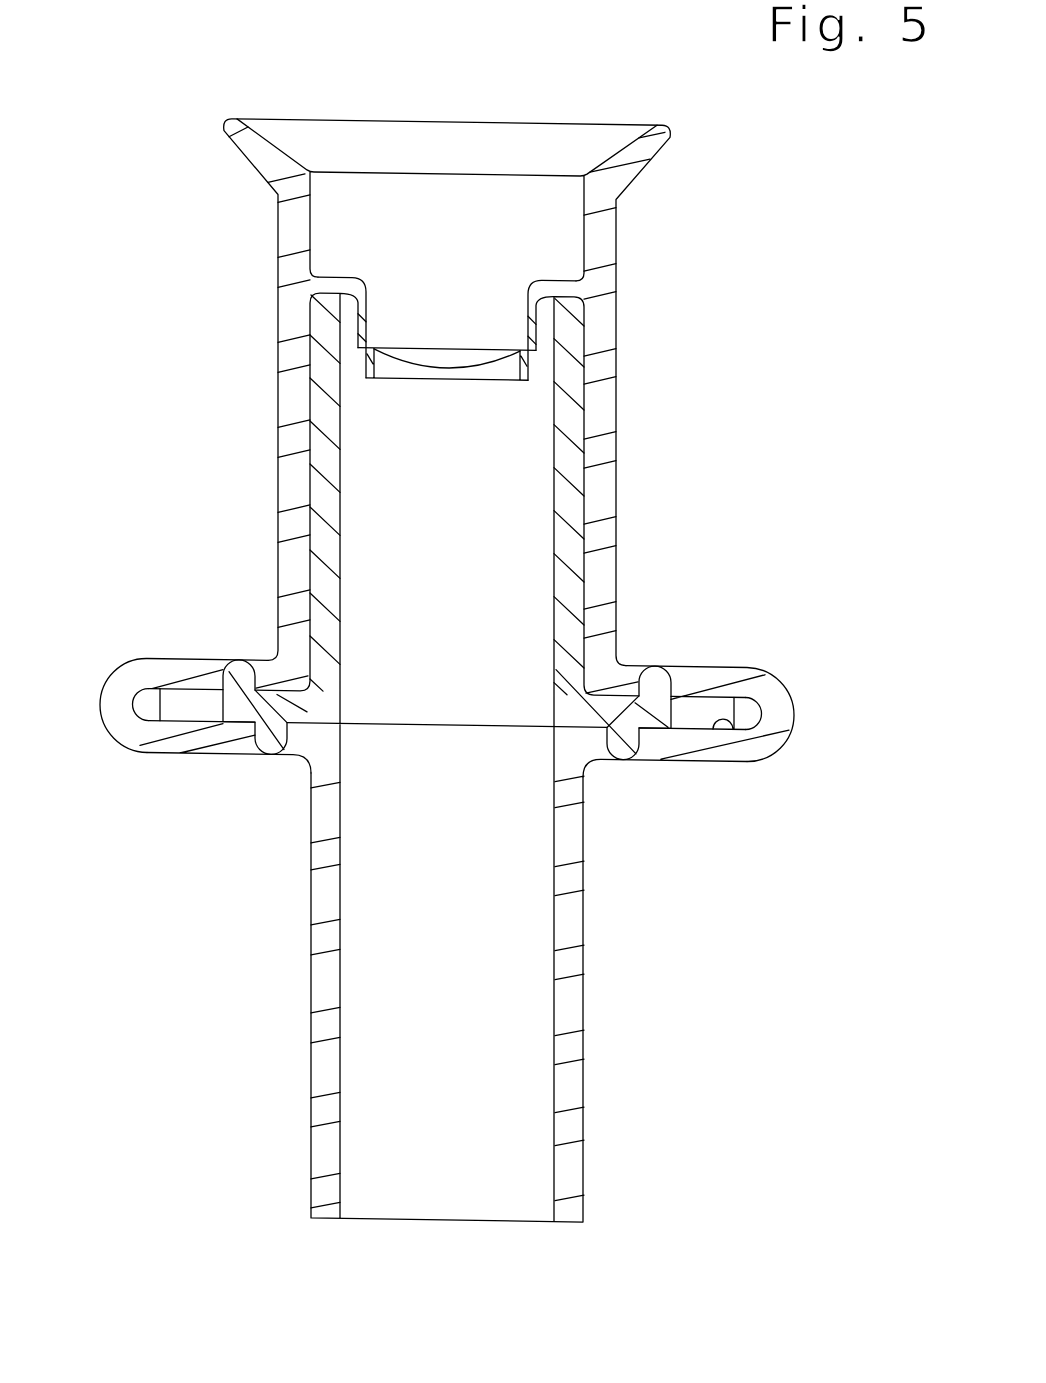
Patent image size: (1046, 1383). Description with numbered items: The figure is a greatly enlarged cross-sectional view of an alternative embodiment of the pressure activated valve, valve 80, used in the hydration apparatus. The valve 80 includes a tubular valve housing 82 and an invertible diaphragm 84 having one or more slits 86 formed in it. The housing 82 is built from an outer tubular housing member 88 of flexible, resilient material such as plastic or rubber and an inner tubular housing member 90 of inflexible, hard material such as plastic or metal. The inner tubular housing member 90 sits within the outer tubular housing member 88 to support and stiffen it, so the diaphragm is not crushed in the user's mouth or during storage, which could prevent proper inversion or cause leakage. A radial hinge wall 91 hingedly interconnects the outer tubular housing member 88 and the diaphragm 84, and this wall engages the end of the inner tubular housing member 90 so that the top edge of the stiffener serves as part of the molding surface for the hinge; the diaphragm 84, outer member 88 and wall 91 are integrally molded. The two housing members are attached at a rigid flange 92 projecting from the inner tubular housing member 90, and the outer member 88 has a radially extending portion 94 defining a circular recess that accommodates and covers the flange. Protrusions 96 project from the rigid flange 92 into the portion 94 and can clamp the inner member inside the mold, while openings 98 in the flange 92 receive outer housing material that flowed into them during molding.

The valve 80 is at (618, 450).
The valve housing 82 is at (295, 398).
The invertible diaphragm 84 is at (397, 373).
The slits 86 is at (450, 373).
The outer tubular housing member 88 is at (602, 371).
The inner tubular housing member 90 is at (563, 652).
The radial hinge wall 91 is at (363, 293).
The rigid flange 92 is at (692, 709).
The radially extending portion 94 is at (716, 670).
The protrusions 96 is at (240, 671).
The openings 98 is at (178, 712).